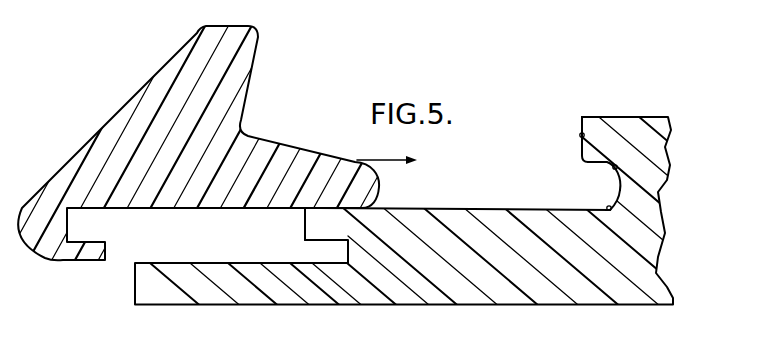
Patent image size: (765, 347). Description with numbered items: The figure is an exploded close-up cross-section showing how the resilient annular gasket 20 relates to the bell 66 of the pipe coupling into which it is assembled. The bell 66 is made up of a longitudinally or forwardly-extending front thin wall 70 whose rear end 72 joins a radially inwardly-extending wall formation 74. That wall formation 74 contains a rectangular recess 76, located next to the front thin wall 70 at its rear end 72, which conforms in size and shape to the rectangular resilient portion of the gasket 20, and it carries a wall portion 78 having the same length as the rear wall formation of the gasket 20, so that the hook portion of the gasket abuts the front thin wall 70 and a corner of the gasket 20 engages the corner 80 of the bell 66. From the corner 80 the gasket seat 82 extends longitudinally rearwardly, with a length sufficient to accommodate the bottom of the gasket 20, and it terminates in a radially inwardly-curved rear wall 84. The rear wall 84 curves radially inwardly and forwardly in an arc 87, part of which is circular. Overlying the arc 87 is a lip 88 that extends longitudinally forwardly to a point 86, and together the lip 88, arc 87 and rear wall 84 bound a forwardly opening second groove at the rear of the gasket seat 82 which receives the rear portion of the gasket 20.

The resilient annular gasket 20 is at (114, 112).
The bell 66 is at (621, 137).
The front thin wall 70 is at (204, 289).
The rear end 72 is at (298, 289).
The wall formation 74 is at (282, 229).
The rectangular recess 76 is at (305, 250).
The wall portion 78 is at (307, 214).
The corner 80 is at (303, 210).
The gasket seat 82 is at (492, 216).
The rear wall 84 is at (605, 205).
The point 86 is at (580, 134).
The arc 87 is at (612, 167).
The lip 88 is at (581, 116).